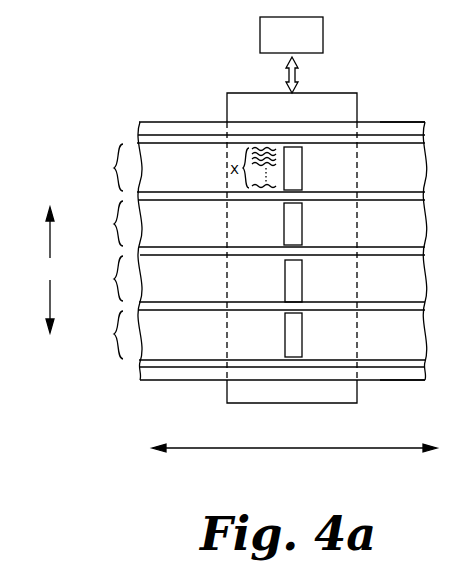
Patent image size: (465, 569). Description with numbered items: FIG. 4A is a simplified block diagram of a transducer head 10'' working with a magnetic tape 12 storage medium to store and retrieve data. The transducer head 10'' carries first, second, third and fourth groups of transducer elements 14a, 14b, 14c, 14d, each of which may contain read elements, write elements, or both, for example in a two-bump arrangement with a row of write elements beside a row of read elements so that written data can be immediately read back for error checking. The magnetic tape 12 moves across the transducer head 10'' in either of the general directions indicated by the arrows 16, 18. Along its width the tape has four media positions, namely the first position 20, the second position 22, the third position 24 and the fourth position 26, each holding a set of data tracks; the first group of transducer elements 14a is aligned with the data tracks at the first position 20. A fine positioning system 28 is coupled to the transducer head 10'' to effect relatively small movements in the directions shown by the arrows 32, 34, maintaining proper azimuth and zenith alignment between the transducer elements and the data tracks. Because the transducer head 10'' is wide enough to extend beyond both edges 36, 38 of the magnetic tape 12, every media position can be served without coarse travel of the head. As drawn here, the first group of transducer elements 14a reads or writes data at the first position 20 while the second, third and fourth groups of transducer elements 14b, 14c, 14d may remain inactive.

The transducer head 10'' is at (317, 227).
The magnetic tape 12 is at (164, 122).
The first group of transducer elements 14a is at (303, 172).
The second group of transducer elements 14b is at (303, 226).
The third group of transducer elements 14c is at (303, 284).
The fourth group of transducer elements 14d is at (303, 336).
The tape movement direction arrow 16 is at (385, 449).
The tape movement direction arrow 18 is at (207, 449).
The first position 20 is at (103, 167).
The second position 22 is at (103, 223).
The third position 24 is at (103, 278).
The fourth position 26 is at (103, 335).
The fine positioning system 28 is at (323, 38).
The head movement direction arrow 32 is at (48, 238).
The head movement direction arrow 34 is at (48, 297).
The edge of the magnetic tape 36 is at (397, 120).
The edge of the magnetic tape 38 is at (383, 381).